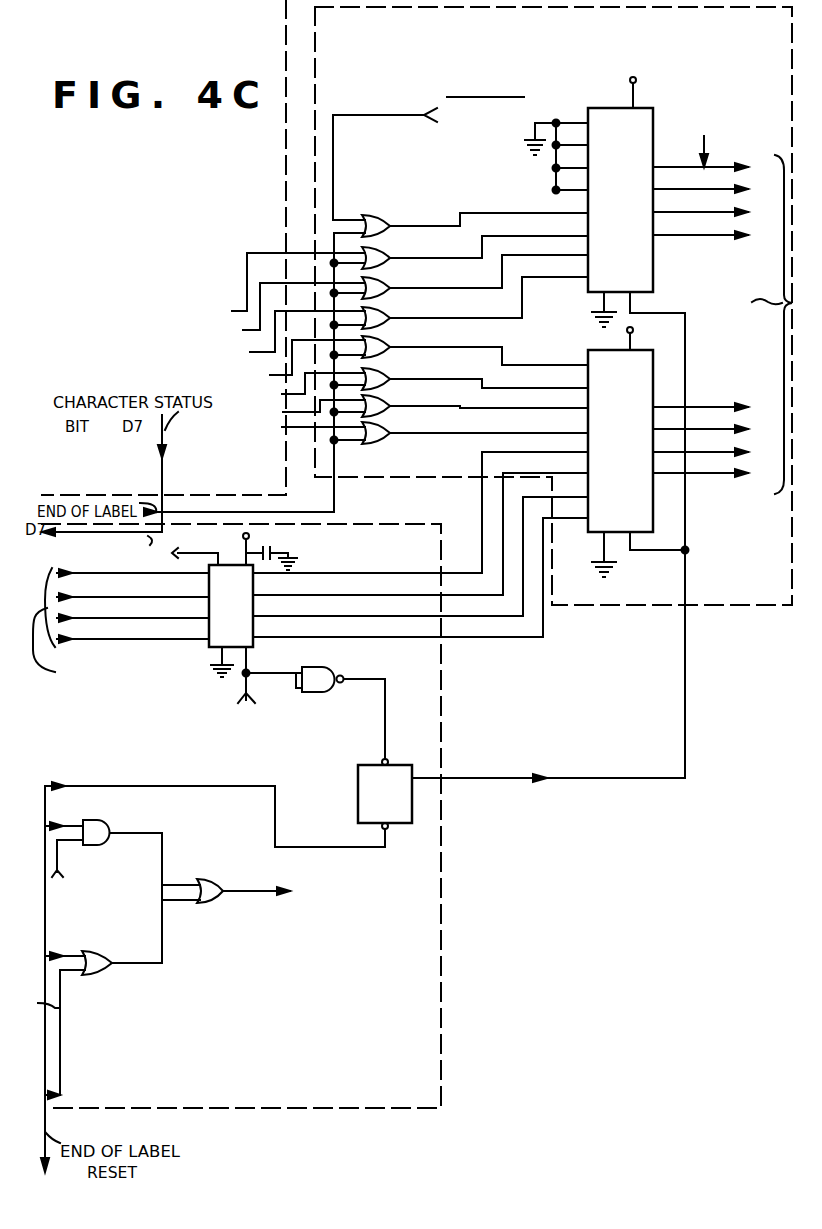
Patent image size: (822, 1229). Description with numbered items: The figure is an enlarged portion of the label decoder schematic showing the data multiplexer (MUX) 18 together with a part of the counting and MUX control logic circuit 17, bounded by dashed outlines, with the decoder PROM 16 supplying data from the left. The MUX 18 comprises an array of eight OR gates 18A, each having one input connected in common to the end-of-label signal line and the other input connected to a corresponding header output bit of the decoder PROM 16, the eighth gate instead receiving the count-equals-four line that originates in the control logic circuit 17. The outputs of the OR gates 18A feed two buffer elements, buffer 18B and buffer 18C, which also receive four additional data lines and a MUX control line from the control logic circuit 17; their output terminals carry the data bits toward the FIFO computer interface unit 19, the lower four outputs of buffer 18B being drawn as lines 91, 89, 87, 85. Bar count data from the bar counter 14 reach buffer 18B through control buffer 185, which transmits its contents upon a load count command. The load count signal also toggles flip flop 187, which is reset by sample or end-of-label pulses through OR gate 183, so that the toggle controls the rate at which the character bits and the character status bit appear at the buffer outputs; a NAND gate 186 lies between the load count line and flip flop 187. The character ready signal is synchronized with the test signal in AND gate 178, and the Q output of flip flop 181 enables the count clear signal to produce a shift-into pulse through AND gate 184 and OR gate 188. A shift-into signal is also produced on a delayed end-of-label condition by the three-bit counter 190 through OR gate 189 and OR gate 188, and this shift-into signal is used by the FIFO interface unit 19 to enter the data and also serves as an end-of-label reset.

The decoder PROM 16 is at (267, 30).
The counting and MUX control logic circuit 17 is at (426, 550).
The data multiplexer (MUX) 18 is at (346, 41).
The OR gates 18A is at (397, 304).
The buffer element 18B is at (647, 377).
The buffer element 18C is at (608, 108).
The first-in-first-out (FIFO) computer interface unit 19 is at (745, 348).
The bar counter 14 is at (111, 634).
The AND gate 178 is at (89, 844).
The flip flop 181 is at (60, 815).
The OR gate 183 is at (88, 782).
The AND gate 184 is at (103, 820).
The control buffer 185 is at (255, 600).
The NAND gate 186 is at (322, 695).
The flip flop 187 is at (413, 772).
The OR gate 188 is at (208, 905).
The OR gate 189 is at (98, 976).
The three-bit counter 190 is at (45, 945).
The output line M3 91 is at (721, 398).
The output line M2 89 is at (721, 420).
The output line M1 87 is at (721, 443).
The output line M0 85 is at (721, 464).